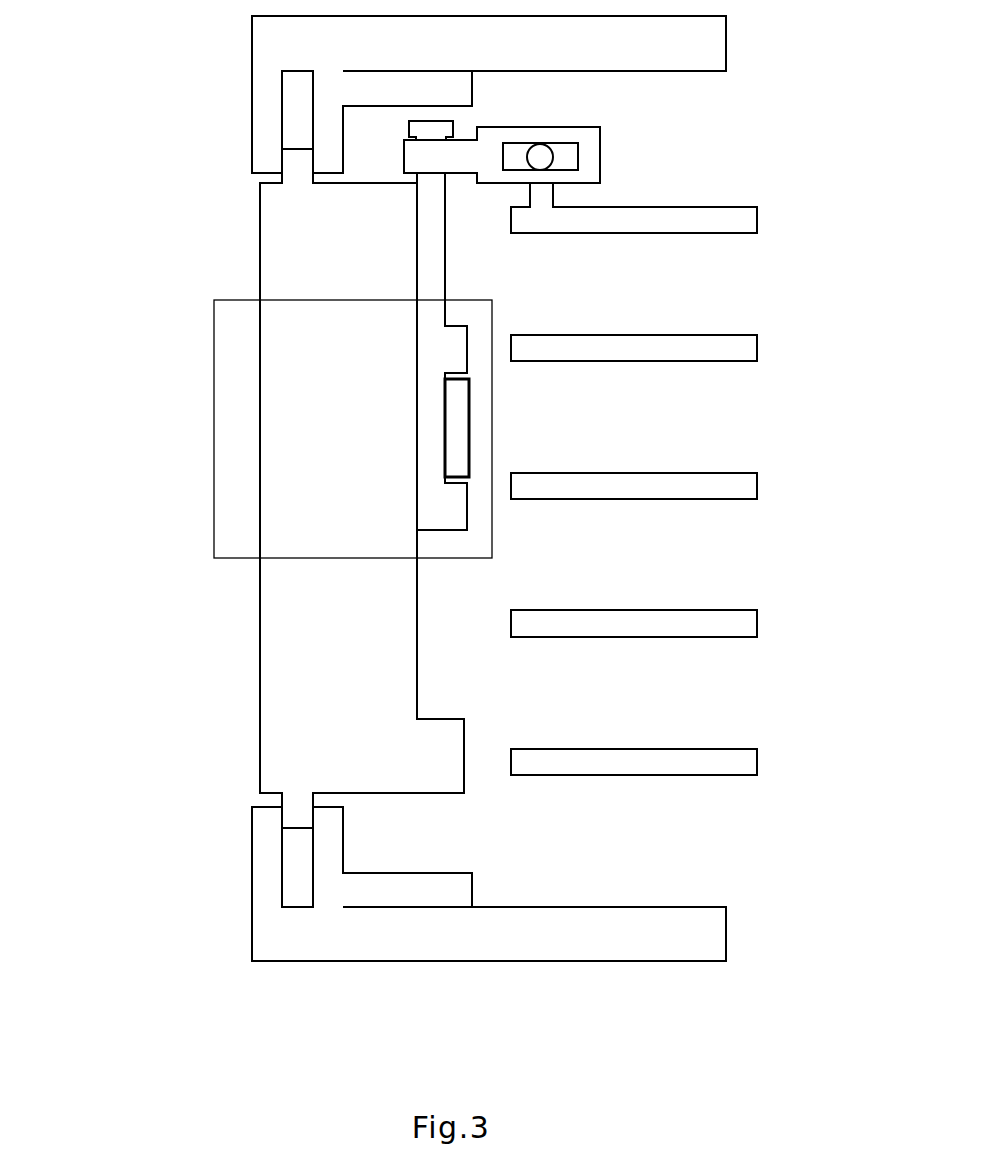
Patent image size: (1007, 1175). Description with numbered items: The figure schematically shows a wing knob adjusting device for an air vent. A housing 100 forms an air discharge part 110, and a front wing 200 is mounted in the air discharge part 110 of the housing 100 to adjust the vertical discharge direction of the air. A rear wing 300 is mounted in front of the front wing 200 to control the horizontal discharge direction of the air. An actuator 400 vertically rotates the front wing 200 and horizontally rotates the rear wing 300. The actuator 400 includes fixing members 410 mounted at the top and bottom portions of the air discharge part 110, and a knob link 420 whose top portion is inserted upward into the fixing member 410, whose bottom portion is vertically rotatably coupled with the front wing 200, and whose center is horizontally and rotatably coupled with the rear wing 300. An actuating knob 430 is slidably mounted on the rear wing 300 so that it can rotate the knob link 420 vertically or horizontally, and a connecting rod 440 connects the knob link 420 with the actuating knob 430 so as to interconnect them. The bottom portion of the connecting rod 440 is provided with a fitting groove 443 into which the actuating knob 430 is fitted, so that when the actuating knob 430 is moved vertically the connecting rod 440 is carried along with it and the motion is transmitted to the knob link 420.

The housing 100 is at (485, 953).
The air discharge part 110 is at (776, 829).
The front wing 200 is at (752, 625).
The rear wing 300 is at (280, 693).
The actuator 400 is at (85, 192).
The fixing member 410 is at (262, 136).
The knob link 420 is at (411, 159).
The actuating knob 430 is at (238, 348).
The connecting rod 440 is at (430, 233).
The fitting groove 443 is at (450, 432).